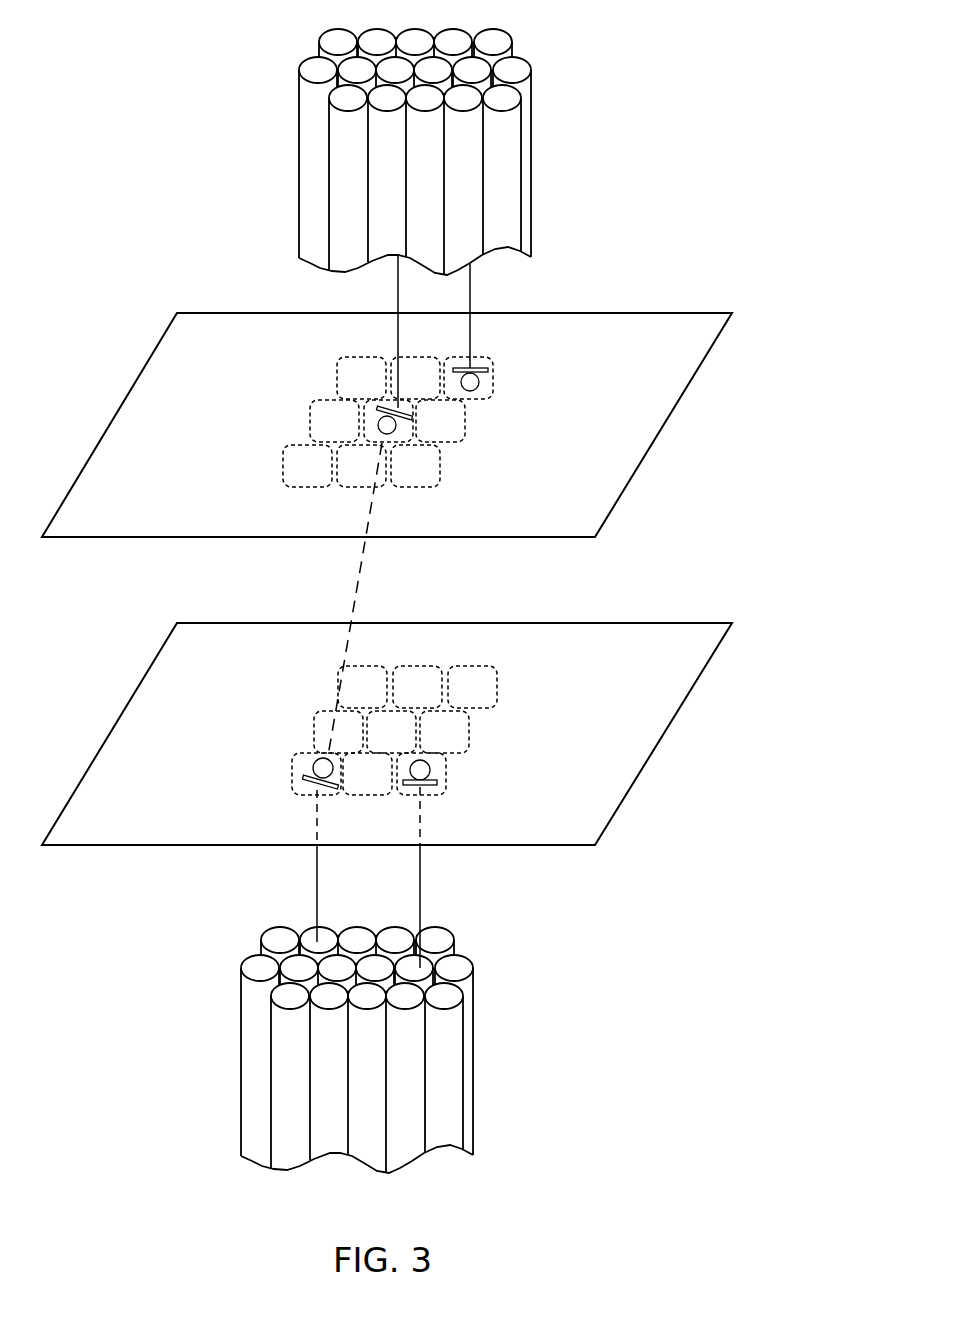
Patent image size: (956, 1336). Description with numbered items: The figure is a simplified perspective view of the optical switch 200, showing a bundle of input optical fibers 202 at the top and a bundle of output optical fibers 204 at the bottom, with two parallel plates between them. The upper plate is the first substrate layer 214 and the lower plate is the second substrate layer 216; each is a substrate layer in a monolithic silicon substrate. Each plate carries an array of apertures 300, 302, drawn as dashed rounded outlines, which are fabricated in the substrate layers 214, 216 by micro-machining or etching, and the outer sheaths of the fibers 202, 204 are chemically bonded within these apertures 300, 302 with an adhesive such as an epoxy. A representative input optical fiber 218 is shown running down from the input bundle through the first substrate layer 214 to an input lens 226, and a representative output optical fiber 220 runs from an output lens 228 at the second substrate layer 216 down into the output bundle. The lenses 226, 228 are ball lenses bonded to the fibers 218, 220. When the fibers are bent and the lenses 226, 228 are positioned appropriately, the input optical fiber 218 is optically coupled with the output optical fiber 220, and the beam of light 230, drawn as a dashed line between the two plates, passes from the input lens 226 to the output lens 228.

The optical switch 200 is at (140, 198).
The input optical fibers 202 is at (540, 185).
The output optical fibers 204 is at (483, 1093).
The first substrate layer 214 is at (690, 325).
The second substrate layer 216 is at (705, 648).
The input optical fiber 218 is at (398, 290).
The output optical fiber 220 is at (317, 880).
The input lens 226 is at (378, 414).
The output lens 228 is at (315, 762).
The beam of light 230 is at (360, 568).
The apertures 300 is at (515, 410).
The apertures 302 is at (517, 712).